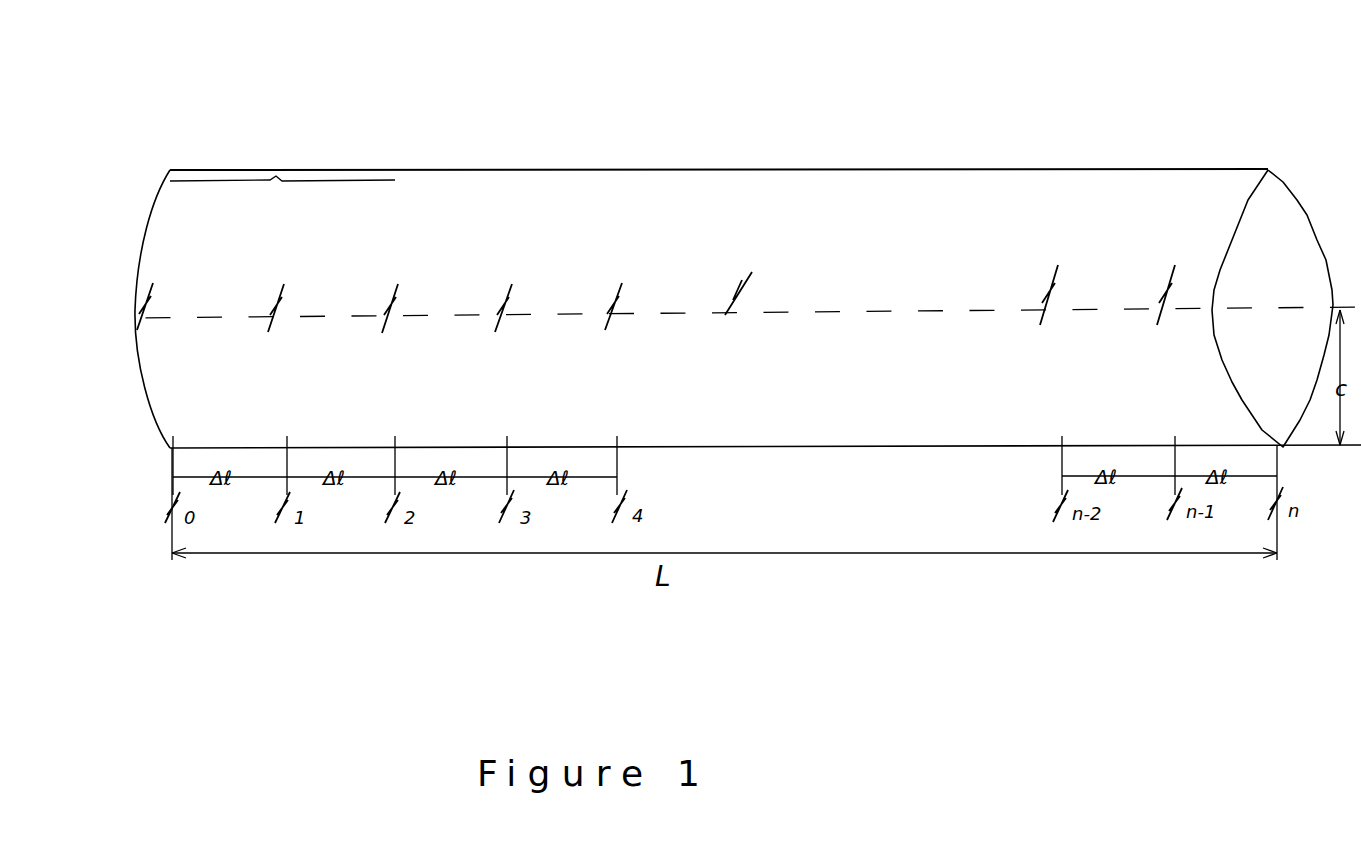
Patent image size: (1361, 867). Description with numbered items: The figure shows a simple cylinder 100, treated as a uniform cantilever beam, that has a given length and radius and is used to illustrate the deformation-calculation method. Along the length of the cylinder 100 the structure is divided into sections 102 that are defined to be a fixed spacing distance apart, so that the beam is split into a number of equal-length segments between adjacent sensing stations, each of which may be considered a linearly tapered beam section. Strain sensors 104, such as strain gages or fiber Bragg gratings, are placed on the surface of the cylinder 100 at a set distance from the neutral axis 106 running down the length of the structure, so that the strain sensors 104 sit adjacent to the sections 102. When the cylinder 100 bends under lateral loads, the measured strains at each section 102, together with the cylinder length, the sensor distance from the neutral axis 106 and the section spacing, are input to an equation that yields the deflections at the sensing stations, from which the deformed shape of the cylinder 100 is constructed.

The cylinder 100 is at (688, 170).
The sections 102 is at (330, 170).
The strain sensors 104 is at (597, 412).
The neutral axis 106 is at (1137, 327).